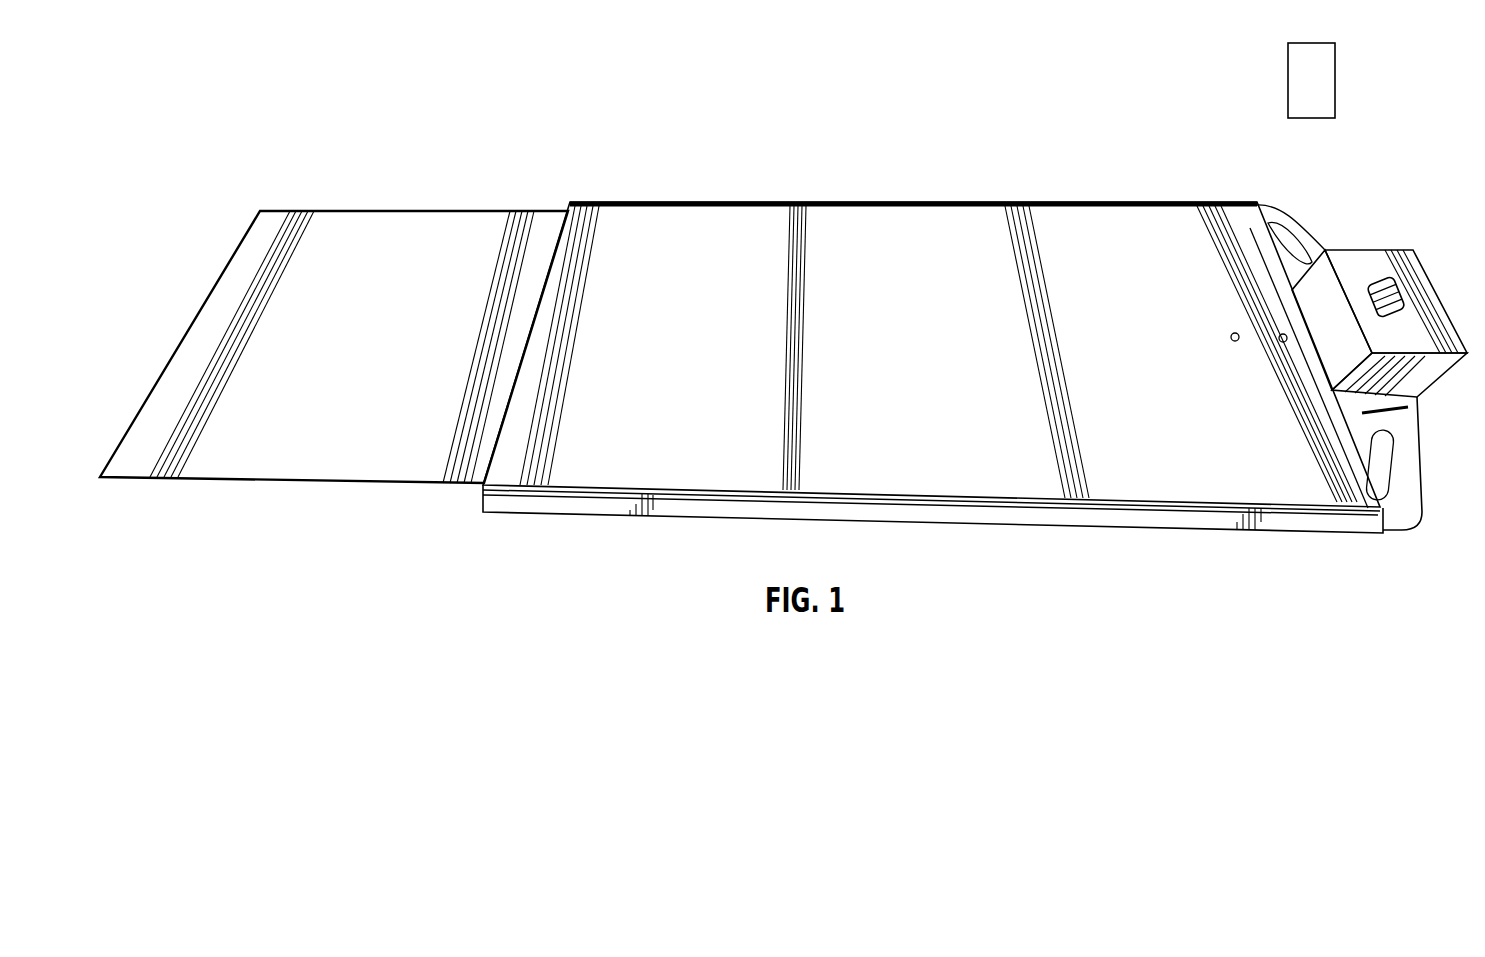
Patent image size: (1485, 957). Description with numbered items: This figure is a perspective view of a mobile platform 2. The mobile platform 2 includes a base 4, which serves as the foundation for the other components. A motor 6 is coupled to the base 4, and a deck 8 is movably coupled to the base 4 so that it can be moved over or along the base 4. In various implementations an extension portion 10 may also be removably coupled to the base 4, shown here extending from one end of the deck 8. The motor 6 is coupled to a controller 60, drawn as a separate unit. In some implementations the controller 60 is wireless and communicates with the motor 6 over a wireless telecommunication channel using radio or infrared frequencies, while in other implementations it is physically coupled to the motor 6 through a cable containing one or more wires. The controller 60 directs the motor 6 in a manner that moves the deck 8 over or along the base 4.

The mobile platform 2 is at (787, 277).
The base 4 is at (1410, 508).
The motor 6 is at (1362, 260).
The deck 8 is at (1057, 217).
The extension portion 10 is at (392, 222).
The controller 60 is at (1335, 80).